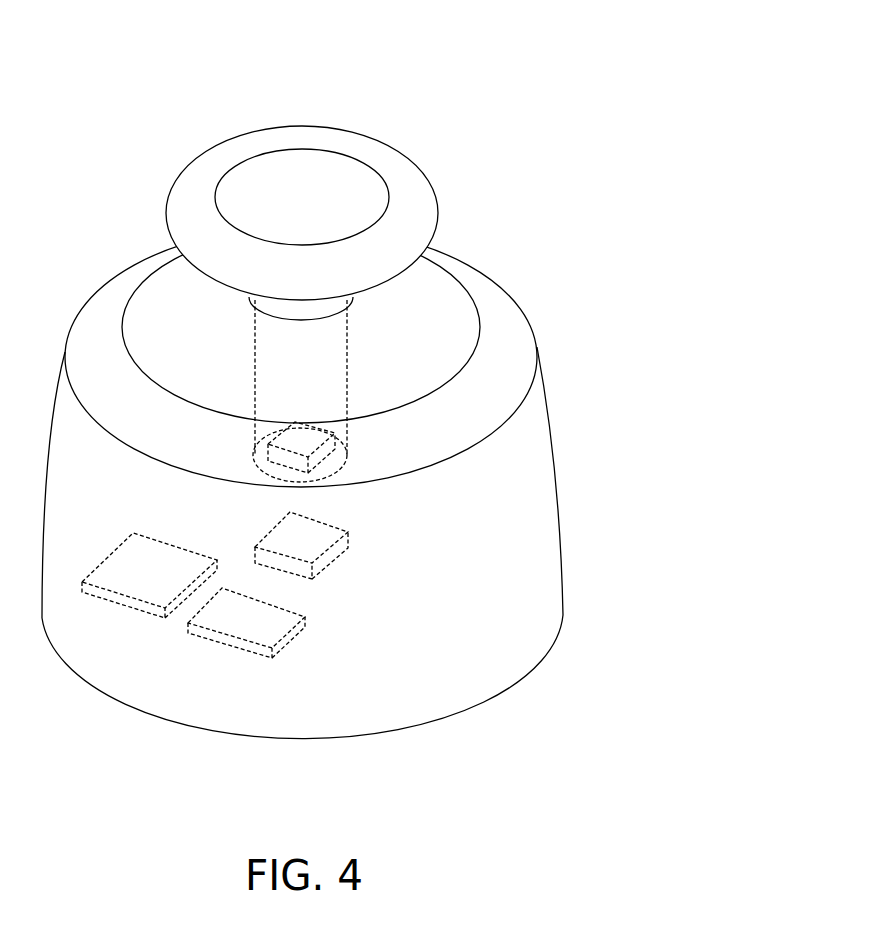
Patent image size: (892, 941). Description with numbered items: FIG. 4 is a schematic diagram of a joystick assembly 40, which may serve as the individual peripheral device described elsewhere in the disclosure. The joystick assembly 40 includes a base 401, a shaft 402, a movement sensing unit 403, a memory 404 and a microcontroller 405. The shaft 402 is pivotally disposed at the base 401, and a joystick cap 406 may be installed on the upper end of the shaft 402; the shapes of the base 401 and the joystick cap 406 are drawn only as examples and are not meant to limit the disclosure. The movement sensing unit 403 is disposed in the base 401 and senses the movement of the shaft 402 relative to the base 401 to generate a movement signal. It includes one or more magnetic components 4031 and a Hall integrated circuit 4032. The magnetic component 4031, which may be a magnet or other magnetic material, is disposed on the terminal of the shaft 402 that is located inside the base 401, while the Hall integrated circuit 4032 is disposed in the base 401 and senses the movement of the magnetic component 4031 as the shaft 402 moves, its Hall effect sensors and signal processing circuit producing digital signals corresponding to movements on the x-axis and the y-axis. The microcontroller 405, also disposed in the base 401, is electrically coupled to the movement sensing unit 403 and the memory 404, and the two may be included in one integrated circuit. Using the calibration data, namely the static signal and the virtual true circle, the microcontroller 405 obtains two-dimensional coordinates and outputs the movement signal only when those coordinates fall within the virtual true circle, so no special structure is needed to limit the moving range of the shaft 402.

The joystick assembly 40 is at (95, 42).
The base 401 is at (493, 598).
The shaft 402 is at (347, 412).
The movement sensing unit 403 is at (488, 500).
The magnetic component 4031 is at (323, 458).
The Hall integrated circuit 4032 is at (348, 530).
The memory 404 is at (240, 617).
The microcontroller 405 is at (133, 578).
The joystick cap 406 is at (342, 142).